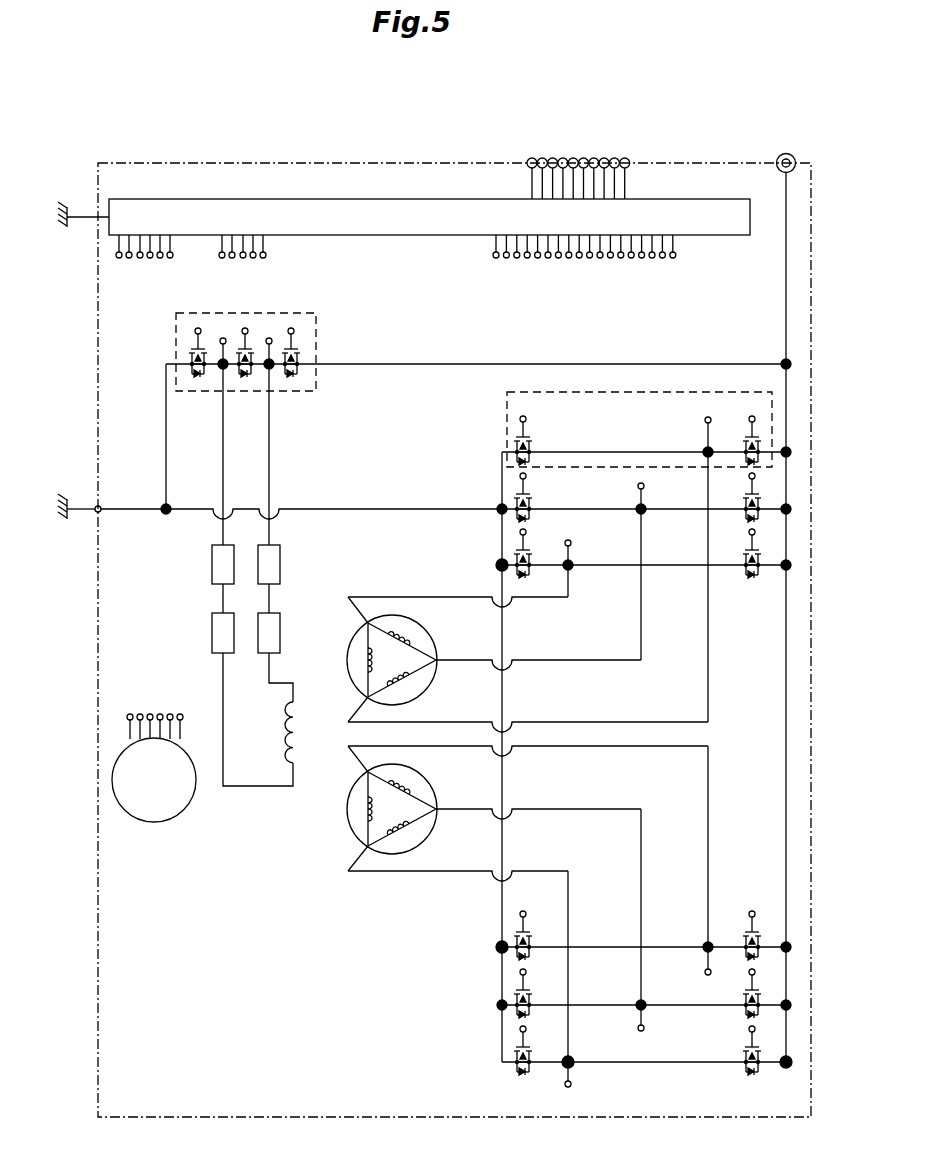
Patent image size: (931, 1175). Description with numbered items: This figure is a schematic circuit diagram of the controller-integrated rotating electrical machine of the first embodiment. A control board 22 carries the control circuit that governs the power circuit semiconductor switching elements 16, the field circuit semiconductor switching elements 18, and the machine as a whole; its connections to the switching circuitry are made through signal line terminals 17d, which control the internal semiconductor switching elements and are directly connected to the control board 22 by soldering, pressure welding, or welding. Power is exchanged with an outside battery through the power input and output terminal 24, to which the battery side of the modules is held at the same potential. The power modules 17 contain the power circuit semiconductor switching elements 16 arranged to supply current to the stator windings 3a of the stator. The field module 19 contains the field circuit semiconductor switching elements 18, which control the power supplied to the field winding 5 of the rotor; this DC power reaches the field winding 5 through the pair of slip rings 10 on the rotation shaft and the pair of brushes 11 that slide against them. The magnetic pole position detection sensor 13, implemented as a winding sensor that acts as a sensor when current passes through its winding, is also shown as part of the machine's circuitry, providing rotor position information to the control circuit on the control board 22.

The control board 22 is at (276, 198).
The signal line terminals 17d is at (558, 160).
The power input and output terminal 24 is at (783, 153).
The field module 19 is at (277, 317).
The field circuit semiconductor switching elements 18 is at (296, 350).
The power module 17 is at (600, 394).
The power circuit semiconductor switching elements 16 is at (515, 442).
The brushes 11 is at (282, 565).
The slip rings 10 is at (215, 628).
The field winding 5 is at (303, 745).
The magnetic pole position detection sensor 13 is at (165, 815).
The stator windings 3a is at (527, 824).